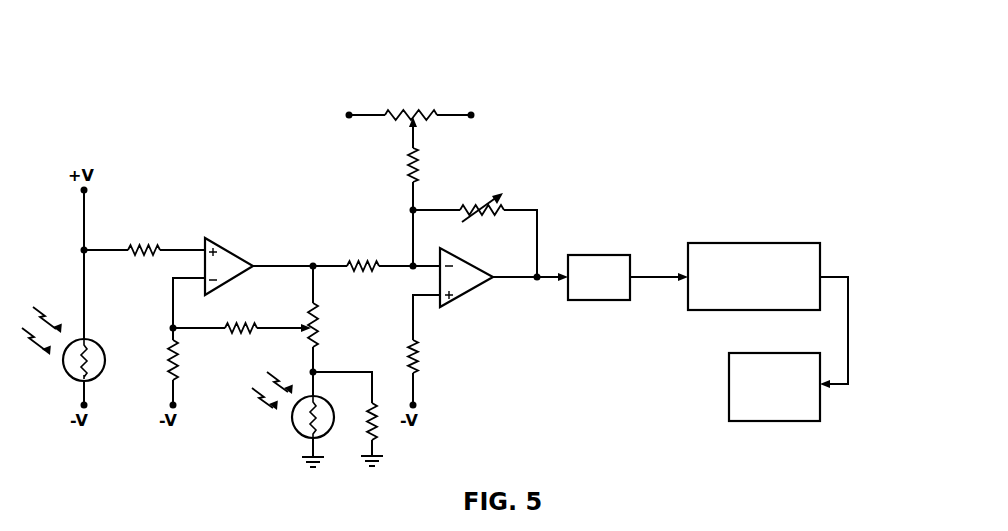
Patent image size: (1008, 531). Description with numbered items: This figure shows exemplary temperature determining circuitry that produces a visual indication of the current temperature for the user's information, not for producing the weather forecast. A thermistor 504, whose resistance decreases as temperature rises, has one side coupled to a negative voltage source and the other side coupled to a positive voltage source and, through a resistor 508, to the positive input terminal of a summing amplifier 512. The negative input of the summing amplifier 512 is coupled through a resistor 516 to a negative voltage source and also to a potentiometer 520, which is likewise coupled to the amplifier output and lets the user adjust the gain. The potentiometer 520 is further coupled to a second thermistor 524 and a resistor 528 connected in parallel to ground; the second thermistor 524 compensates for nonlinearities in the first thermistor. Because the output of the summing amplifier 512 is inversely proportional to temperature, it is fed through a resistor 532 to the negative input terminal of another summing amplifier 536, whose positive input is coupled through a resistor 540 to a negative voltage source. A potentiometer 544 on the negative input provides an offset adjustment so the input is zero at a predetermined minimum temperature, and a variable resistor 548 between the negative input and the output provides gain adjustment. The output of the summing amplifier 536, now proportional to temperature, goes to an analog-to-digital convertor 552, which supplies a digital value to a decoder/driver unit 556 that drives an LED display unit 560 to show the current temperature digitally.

The thermistor 504 is at (104, 352).
The resistor 508 is at (132, 242).
The summing amplifier 512 is at (224, 240).
The resistor 516 is at (177, 360).
The potentiometer 520 is at (324, 331).
The second thermistor 524 is at (295, 431).
The resistor 528 is at (378, 424).
The resistor 532 is at (365, 252).
The summing amplifier 536 is at (470, 292).
The resistor 540 is at (417, 358).
The potentiometer 544 is at (414, 100).
The variable resistor 548 is at (474, 196).
The analog-to-digital convertor 552 is at (602, 301).
The decoder/driver unit 556 is at (769, 243).
The LED display unit 560 is at (729, 388).